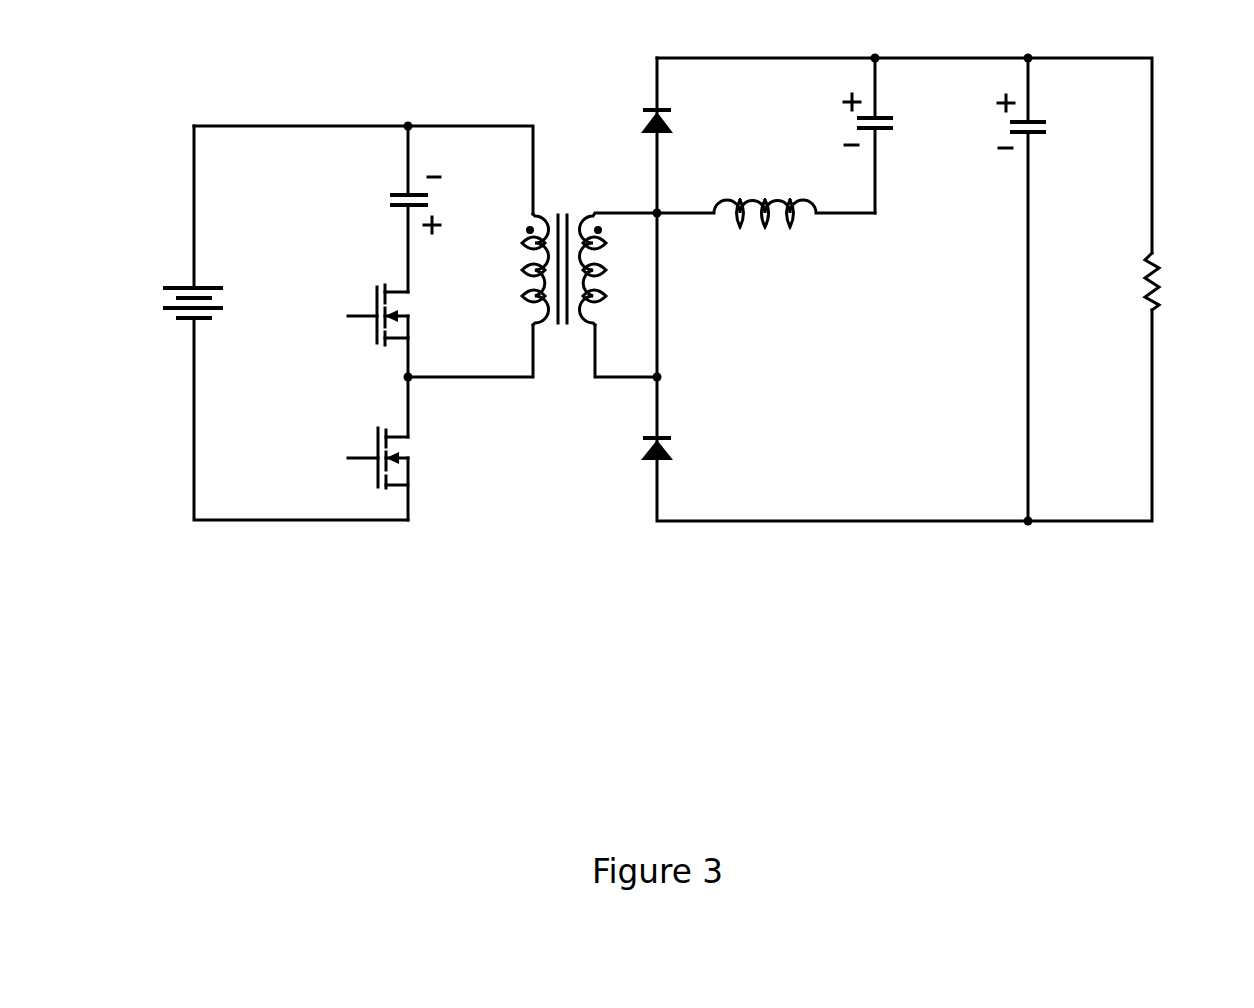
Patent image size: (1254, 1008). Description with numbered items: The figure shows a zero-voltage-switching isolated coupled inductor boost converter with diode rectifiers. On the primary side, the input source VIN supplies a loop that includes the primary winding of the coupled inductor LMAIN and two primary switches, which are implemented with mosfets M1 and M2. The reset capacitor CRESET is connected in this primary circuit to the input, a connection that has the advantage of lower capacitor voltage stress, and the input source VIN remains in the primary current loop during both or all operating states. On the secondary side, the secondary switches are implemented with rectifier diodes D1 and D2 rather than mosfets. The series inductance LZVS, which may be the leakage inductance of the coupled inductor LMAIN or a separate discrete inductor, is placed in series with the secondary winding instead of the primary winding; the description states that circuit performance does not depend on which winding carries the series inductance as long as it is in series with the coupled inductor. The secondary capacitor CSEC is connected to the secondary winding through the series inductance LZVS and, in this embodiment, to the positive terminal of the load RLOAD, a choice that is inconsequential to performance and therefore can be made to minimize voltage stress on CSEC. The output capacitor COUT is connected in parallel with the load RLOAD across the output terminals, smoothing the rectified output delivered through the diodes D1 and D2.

The input source VIN is at (165, 304).
The reset capacitor CRESET is at (362, 205).
The primary switch mosfet M2 is at (364, 315).
The primary switch mosfet M1 is at (388, 458).
The coupled inductor LMAIN is at (589, 246).
The rectifier diode D2 is at (638, 124).
The rectifier diode D1 is at (639, 451).
The series inductance LZVS is at (766, 187).
The secondary capacitor CSEC is at (906, 135).
The output capacitor COUT is at (1059, 289).
The load RLOAD is at (1196, 281).